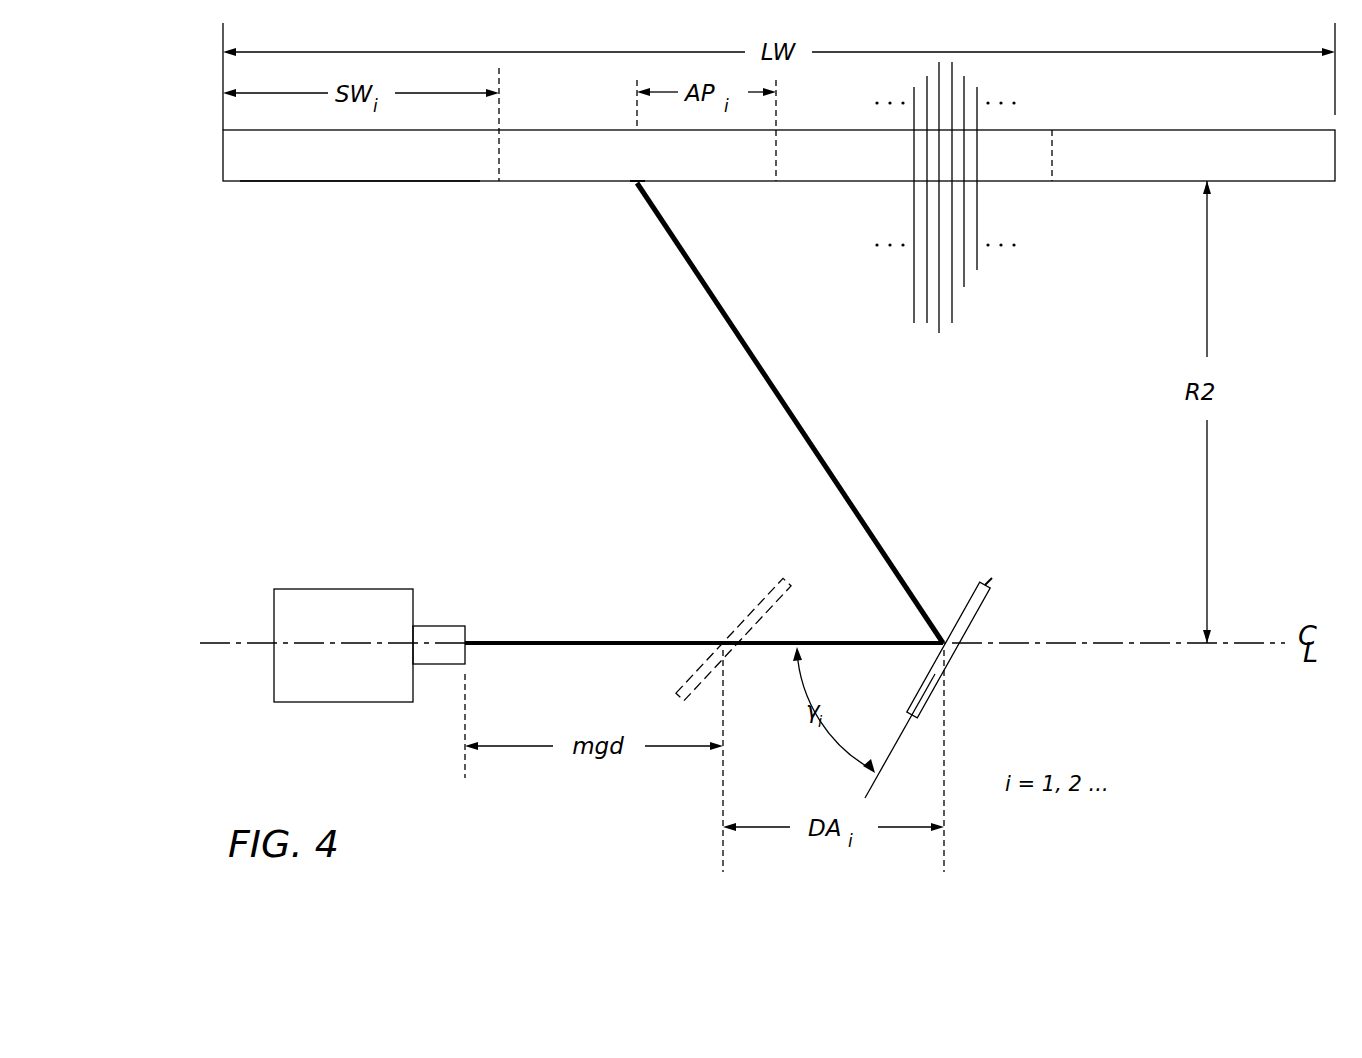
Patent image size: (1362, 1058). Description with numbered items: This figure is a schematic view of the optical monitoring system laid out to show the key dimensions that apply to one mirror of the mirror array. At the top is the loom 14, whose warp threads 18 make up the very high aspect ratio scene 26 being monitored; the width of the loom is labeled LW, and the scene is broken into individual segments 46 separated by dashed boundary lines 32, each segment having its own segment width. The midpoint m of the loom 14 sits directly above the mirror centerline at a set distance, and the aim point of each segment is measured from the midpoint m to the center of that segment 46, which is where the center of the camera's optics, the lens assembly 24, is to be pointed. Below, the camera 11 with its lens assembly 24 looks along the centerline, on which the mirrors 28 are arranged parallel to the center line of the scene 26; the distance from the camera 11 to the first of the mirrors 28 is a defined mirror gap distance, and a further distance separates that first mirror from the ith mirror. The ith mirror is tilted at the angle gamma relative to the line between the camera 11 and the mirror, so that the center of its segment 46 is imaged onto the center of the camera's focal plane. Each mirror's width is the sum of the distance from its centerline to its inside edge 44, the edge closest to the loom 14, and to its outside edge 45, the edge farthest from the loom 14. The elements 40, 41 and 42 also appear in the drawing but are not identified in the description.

The camera 11 is at (323, 615).
The loom 14 is at (1307, 193).
The warp threads 18 is at (952, 297).
The lens assembly 24 is at (437, 637).
The scene 26 is at (313, 194).
The mirrors 28 is at (833, 622).
The boundary lines 32 is at (1052, 181).
The incident beam 40 is at (677, 640).
The reflected beam 41 is at (763, 380).
The beam spot 42 is at (637, 183).
The inside edge 44 is at (975, 582).
The outside edge 45 is at (905, 718).
The segments 46 is at (548, 165).
The midpoint of the loom m is at (776, 155).